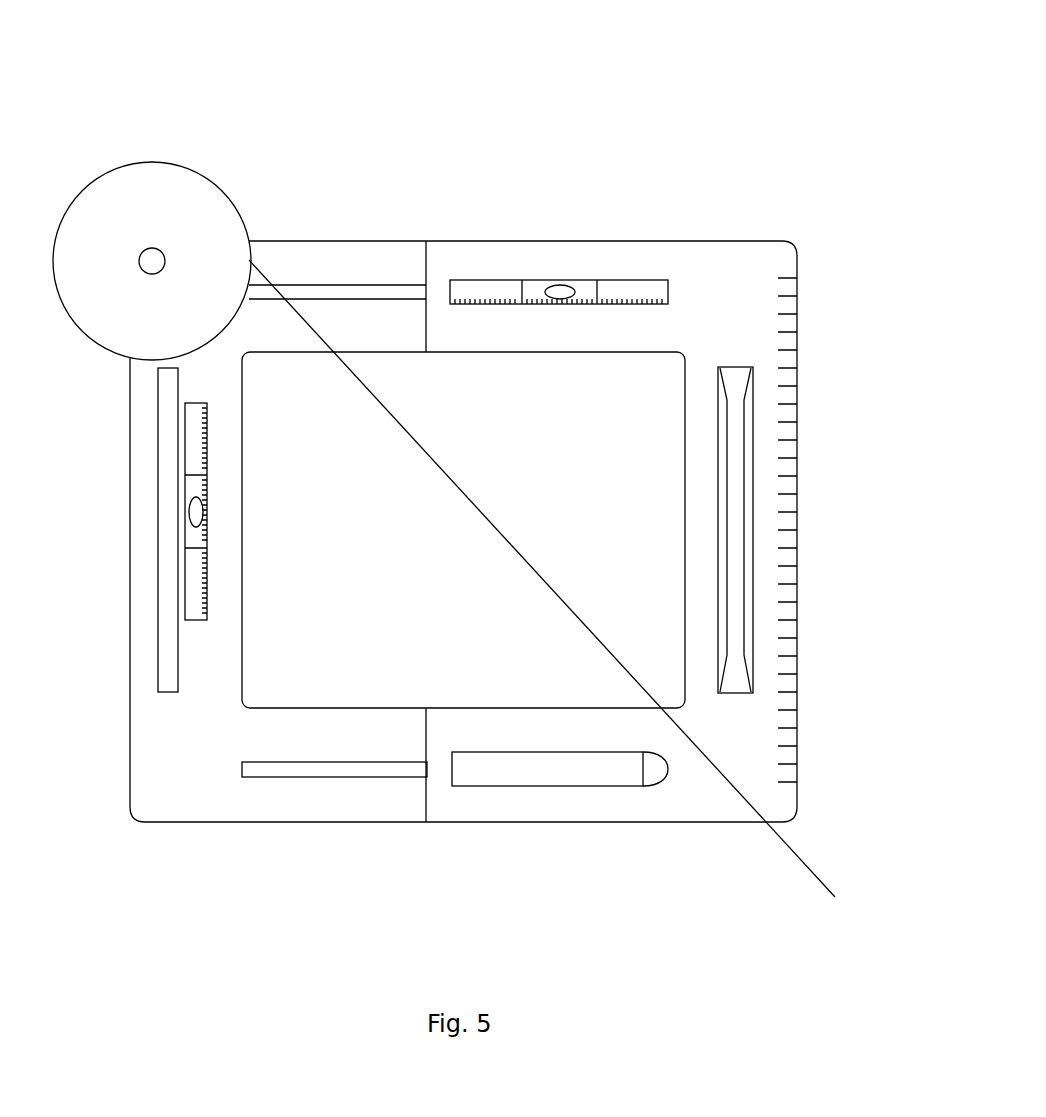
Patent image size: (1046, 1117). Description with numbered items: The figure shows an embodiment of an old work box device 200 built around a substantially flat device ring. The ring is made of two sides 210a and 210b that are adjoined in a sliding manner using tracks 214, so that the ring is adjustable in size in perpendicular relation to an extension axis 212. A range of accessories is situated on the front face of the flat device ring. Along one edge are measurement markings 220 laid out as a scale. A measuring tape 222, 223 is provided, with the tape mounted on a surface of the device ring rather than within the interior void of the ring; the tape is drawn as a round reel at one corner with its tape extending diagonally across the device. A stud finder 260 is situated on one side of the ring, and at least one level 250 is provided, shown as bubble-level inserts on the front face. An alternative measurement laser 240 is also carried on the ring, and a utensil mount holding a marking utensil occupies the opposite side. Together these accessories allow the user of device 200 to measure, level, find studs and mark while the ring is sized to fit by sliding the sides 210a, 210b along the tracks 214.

The device 200 is at (229, 74).
The side 210a is at (165, 762).
The side 210b is at (727, 748).
The extension axis 212 is at (425, 273).
The tracks 214 is at (290, 290).
The measurement markings 220 is at (784, 366).
The measuring tape 222 is at (67, 318).
The measuring tape 223 is at (825, 878).
The alternative measurement laser 240 is at (543, 775).
The level 250 is at (580, 286).
The stud finder 260 is at (168, 485).